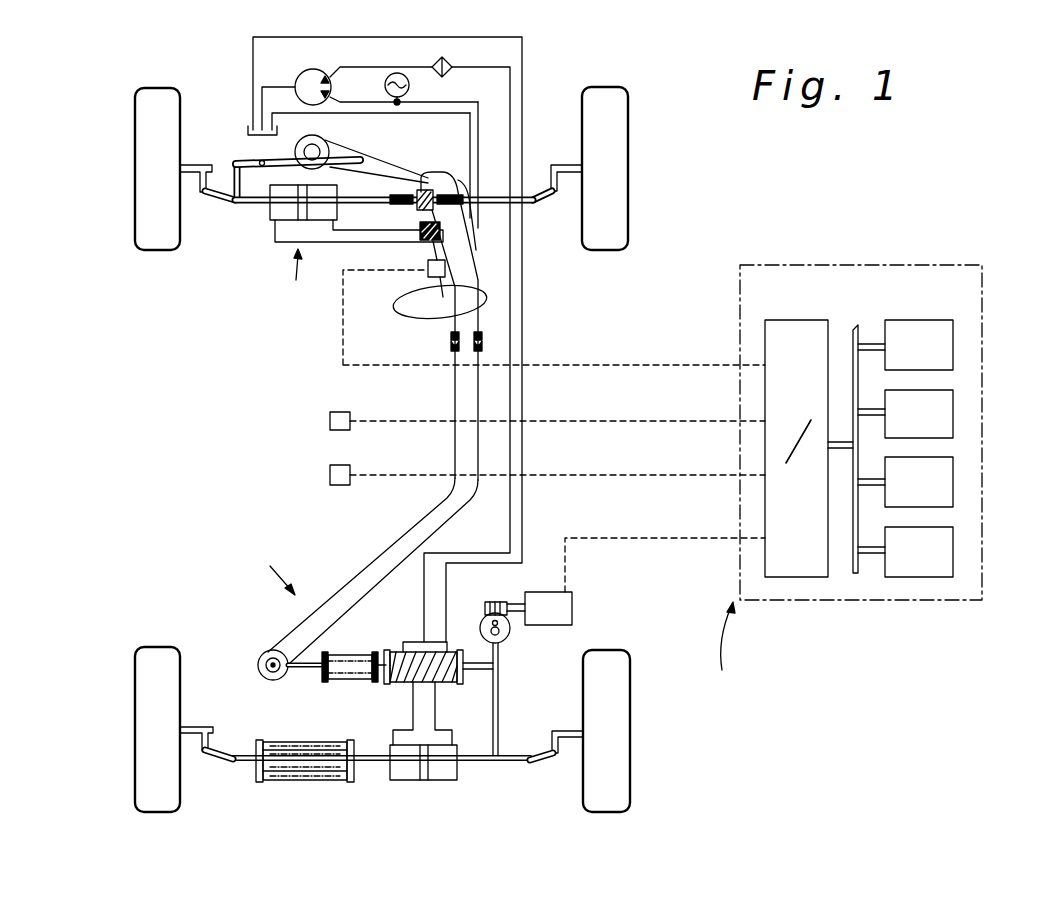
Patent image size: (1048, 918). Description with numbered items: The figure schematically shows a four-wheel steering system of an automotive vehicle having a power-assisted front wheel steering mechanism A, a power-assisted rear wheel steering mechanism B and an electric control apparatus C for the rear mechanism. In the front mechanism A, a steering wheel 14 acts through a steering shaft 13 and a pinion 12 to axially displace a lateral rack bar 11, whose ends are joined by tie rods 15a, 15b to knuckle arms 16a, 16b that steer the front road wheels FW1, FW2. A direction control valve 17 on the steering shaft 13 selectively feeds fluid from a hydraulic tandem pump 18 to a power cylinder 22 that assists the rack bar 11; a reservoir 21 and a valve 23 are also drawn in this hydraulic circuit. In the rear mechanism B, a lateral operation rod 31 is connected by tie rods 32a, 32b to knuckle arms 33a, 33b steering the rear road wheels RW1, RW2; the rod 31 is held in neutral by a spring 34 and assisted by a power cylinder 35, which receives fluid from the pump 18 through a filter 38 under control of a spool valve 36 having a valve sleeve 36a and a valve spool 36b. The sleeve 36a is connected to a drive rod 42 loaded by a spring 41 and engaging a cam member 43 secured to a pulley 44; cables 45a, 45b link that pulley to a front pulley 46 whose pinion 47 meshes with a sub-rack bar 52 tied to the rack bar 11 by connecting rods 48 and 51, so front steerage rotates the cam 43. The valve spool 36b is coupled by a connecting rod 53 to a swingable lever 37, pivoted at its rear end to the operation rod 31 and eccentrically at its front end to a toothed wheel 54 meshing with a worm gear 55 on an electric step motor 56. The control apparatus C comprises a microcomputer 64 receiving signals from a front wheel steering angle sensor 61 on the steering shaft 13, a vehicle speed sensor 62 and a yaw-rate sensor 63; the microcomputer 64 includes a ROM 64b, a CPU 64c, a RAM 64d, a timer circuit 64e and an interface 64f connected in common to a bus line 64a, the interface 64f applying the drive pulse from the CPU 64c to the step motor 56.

The lateral rack bar 11 is at (465, 190).
The pinion 12 is at (425, 172).
The steering shaft 13 is at (471, 258).
The steering wheel 14 is at (405, 312).
The tie rod 15a is at (218, 205).
The tie rod 15b is at (547, 205).
The knuckle arm 16a is at (200, 165).
The knuckle arm 16b is at (557, 165).
The direction control valve 17 is at (418, 238).
The hydraulic tandem pump 18 is at (302, 72).
The reservoir 21 is at (386, 80).
The power cylinder 22 is at (272, 222).
The control valve 23 is at (250, 128).
The lateral operation rod 31 is at (374, 764).
The tie rod 32a is at (217, 764).
The tie rod 32b is at (547, 764).
The knuckle arm 33a is at (200, 727).
The knuckle arm 33b is at (559, 730).
The spring 34 is at (262, 782).
The power cylinder 35 is at (408, 781).
The spool valve 36 is at (397, 690).
The valve sleeve 36a is at (387, 650).
The valve spool 36b is at (388, 684).
The swingable lever 37 is at (500, 720).
The filter 38 is at (437, 62).
The spring 41 is at (328, 684).
The drive rod 42 is at (299, 672).
The cam member 43 is at (258, 667).
The pulley 44 is at (262, 653).
The cable 45a is at (362, 570).
The cable 45b is at (400, 558).
The pulley 46 is at (306, 139).
The pinion 47 is at (328, 152).
The connecting rod 48 is at (255, 161).
The connecting rod 51 is at (232, 180).
The sub-rack bar 52 is at (420, 170).
The connecting rod 53 is at (478, 673).
The toothed wheel 54 is at (483, 634).
The worm gear 55 is at (496, 601).
The electric step motor 56 is at (556, 592).
The front wheel steering angle sensor 61 is at (427, 272).
The vehicle speed sensor 62 is at (337, 412).
The yaw-rate sensor 63 is at (337, 465).
The microcomputer 64 is at (907, 262).
The bus line 64a is at (858, 573).
The ROM 64b is at (953, 347).
The CPU 64c is at (953, 412).
The RAM 64d is at (953, 482).
The timer circuit 64e is at (953, 550).
The interface 64f is at (805, 577).
The front road wheel FW1 is at (158, 88).
The front road wheel FW2 is at (604, 87).
The rear road wheel RW1 is at (160, 812).
The rear road wheel RW2 is at (604, 812).
The front wheel steering mechanism A is at (298, 301).
The rear wheel steering mechanism B is at (260, 569).
The electric control device C is at (725, 705).